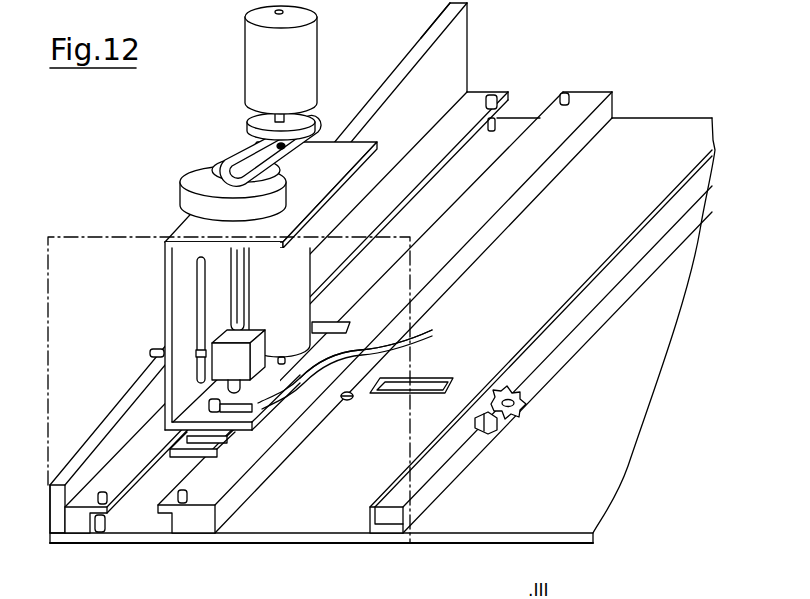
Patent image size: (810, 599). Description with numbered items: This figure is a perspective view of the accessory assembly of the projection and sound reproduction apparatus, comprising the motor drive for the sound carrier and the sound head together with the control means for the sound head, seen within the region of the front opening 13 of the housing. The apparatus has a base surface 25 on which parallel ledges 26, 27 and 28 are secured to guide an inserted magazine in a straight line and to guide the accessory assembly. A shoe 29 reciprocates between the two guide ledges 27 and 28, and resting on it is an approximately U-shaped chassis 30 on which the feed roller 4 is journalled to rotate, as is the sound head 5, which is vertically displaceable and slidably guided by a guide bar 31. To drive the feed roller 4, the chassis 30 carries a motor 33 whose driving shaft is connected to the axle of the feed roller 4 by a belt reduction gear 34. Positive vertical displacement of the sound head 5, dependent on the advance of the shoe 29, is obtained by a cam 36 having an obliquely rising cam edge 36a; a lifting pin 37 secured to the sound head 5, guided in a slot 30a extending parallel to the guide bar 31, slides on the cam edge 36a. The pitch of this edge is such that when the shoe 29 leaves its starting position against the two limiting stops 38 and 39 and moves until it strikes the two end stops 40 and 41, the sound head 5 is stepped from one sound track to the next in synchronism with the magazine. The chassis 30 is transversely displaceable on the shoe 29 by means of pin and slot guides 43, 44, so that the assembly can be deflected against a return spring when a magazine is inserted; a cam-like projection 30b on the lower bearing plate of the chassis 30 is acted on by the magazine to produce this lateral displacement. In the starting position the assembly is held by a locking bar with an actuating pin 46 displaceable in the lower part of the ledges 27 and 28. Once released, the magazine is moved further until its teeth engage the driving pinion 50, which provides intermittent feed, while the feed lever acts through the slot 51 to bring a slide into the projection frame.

The feed roller 4 is at (302, 282).
The sound head 5 is at (252, 372).
The opening 13 is at (78, 237).
The base surface 25 is at (500, 512).
The ledge 26 is at (388, 532).
The guide ledge 27 is at (197, 537).
The guide ledge 28 is at (76, 537).
The shoe 29 is at (213, 452).
The chassis 30 is at (165, 280).
The slot 30a is at (203, 320).
The cam-like projection 30b is at (407, 340).
The guide bar 31 is at (235, 318).
The motor 33 is at (263, 58).
The belt reduction gear 34 is at (242, 147).
The cam 36 is at (458, 46).
The cam edge 36a is at (421, 50).
The lifting pin 37 is at (150, 352).
The limiting stop 38 is at (105, 494).
The limiting stop 39 is at (187, 492).
The end stop 40 is at (498, 92).
The end stop 41 is at (568, 90).
The pin and slot guide 43 is at (209, 403).
The pin and slot guide 44 is at (383, 319).
The actuating pin 46 is at (353, 397).
The driving pinion 50 is at (523, 405).
The slot 51 is at (448, 377).